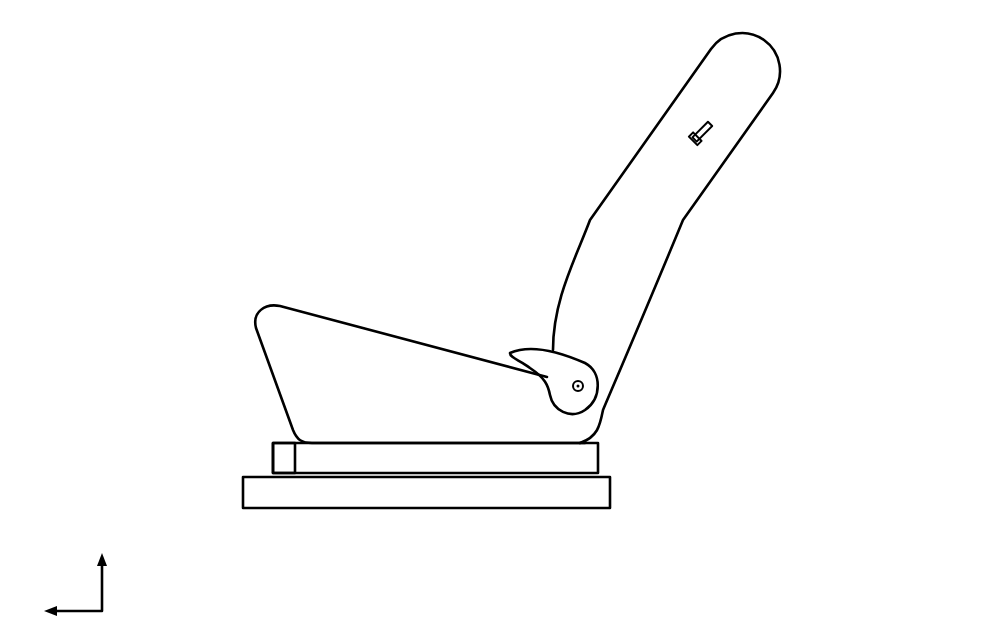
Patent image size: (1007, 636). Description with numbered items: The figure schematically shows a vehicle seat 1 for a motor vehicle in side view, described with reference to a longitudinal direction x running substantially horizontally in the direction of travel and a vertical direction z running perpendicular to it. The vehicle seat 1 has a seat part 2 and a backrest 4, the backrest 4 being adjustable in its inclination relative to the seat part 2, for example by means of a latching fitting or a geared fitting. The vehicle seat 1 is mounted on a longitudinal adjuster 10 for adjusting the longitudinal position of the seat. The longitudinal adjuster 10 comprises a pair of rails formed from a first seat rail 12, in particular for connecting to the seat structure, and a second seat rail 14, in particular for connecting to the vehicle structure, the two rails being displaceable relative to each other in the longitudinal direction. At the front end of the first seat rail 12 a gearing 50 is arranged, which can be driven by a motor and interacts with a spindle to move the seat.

The vehicle seat 1 is at (392, 121).
The seat part 2 is at (368, 367).
The backrest 4 is at (640, 193).
The longitudinal adjuster 10 is at (254, 428).
The first seat rail 12 is at (585, 458).
The second seat rail 14 is at (595, 490).
The gearing 50 is at (280, 458).